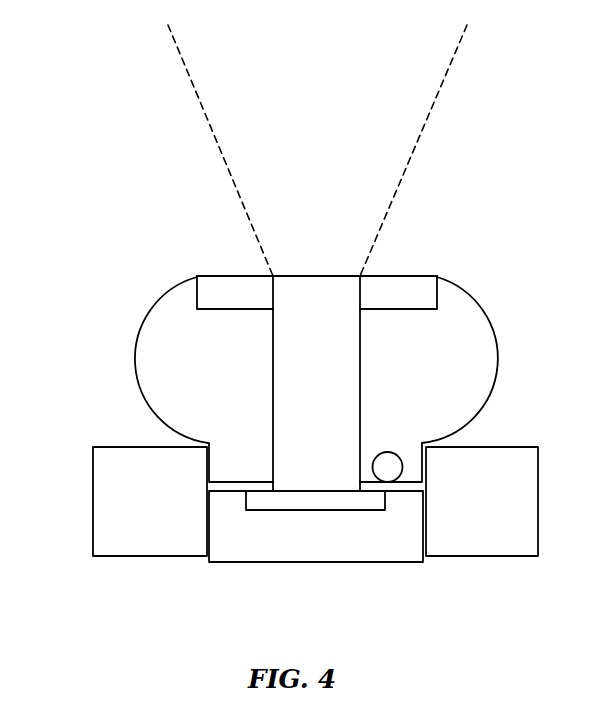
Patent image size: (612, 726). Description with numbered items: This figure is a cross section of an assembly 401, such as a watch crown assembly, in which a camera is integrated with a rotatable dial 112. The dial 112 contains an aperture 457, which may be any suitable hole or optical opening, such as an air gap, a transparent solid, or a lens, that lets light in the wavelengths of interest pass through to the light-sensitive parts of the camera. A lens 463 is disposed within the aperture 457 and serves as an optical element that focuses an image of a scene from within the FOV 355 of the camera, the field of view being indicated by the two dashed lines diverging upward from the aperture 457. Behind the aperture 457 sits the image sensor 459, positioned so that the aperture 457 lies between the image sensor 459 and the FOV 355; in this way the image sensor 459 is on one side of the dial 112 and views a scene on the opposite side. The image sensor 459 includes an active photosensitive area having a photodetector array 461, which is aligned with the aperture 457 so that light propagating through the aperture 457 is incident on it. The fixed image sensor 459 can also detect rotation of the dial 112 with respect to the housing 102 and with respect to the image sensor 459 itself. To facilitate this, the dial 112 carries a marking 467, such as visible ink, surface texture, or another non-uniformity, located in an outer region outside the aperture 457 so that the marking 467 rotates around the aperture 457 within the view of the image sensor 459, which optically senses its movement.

The housing 102 is at (147, 556).
The rotatable dial 112 is at (146, 302).
The FOV 355 is at (220, 142).
The assembly 401 is at (153, 236).
The aperture 457 is at (318, 276).
The image sensor 459 is at (378, 548).
The photodetector array 461 is at (268, 503).
The lens 463 is at (283, 397).
The marking 467 is at (387, 452).